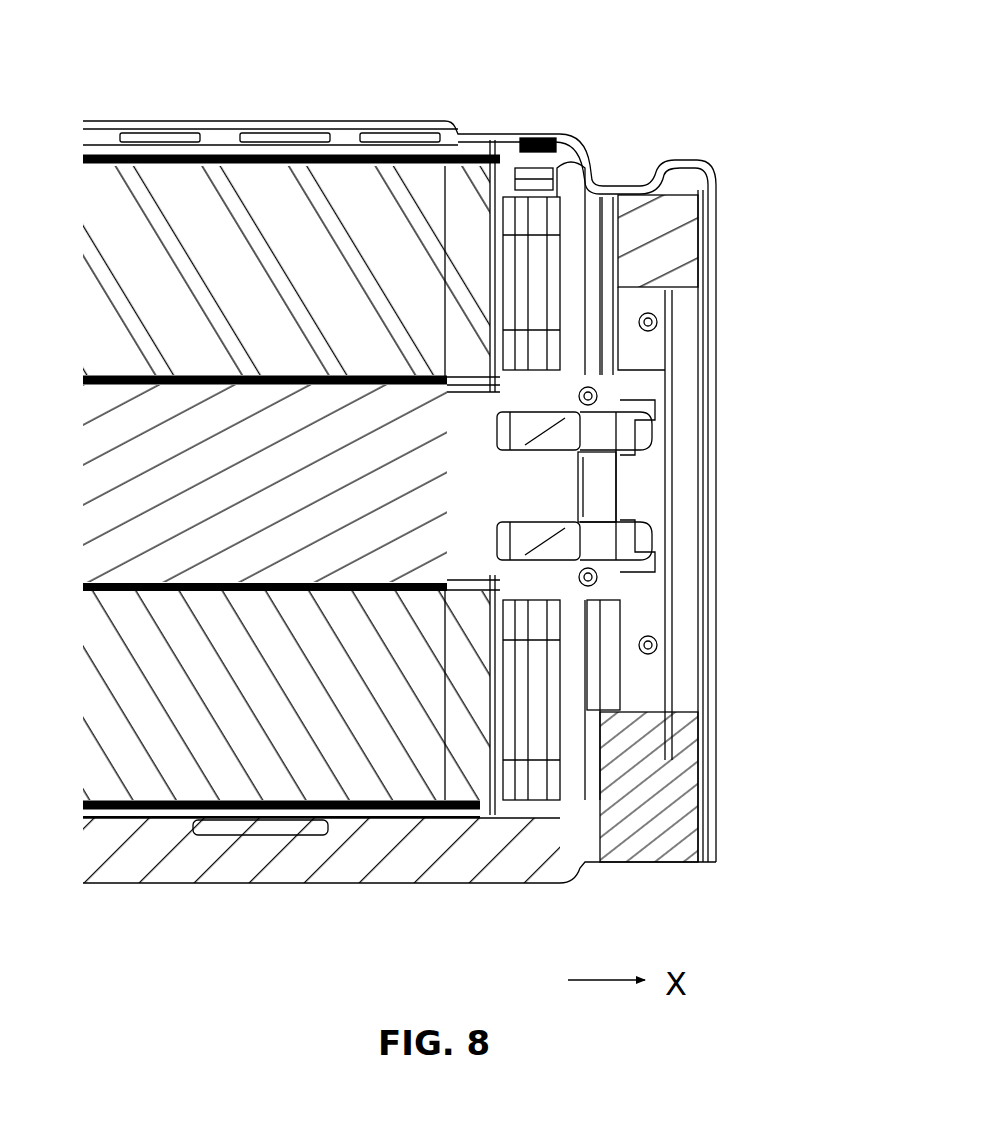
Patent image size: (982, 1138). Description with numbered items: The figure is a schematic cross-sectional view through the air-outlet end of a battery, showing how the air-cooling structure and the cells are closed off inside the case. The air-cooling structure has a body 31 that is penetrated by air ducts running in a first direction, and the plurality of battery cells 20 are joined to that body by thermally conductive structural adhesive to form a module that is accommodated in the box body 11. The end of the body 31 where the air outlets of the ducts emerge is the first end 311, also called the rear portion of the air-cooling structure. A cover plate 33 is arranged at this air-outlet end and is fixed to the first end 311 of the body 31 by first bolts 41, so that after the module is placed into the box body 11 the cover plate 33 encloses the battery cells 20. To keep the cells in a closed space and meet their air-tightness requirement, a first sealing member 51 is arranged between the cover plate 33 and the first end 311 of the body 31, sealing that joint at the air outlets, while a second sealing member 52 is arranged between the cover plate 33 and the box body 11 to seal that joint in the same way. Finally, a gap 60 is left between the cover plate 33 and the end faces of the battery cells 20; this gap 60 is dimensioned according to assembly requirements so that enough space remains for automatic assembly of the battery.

The box body 11 is at (423, 878).
The battery cells 20 is at (408, 190).
The body 31 is at (210, 415).
The first end 311 is at (566, 478).
The cover plate 33 is at (650, 604).
The first bolts 41 is at (636, 434).
The first sealing member 51 is at (598, 398).
The second sealing member 52 is at (657, 326).
The gap 60 is at (565, 770).